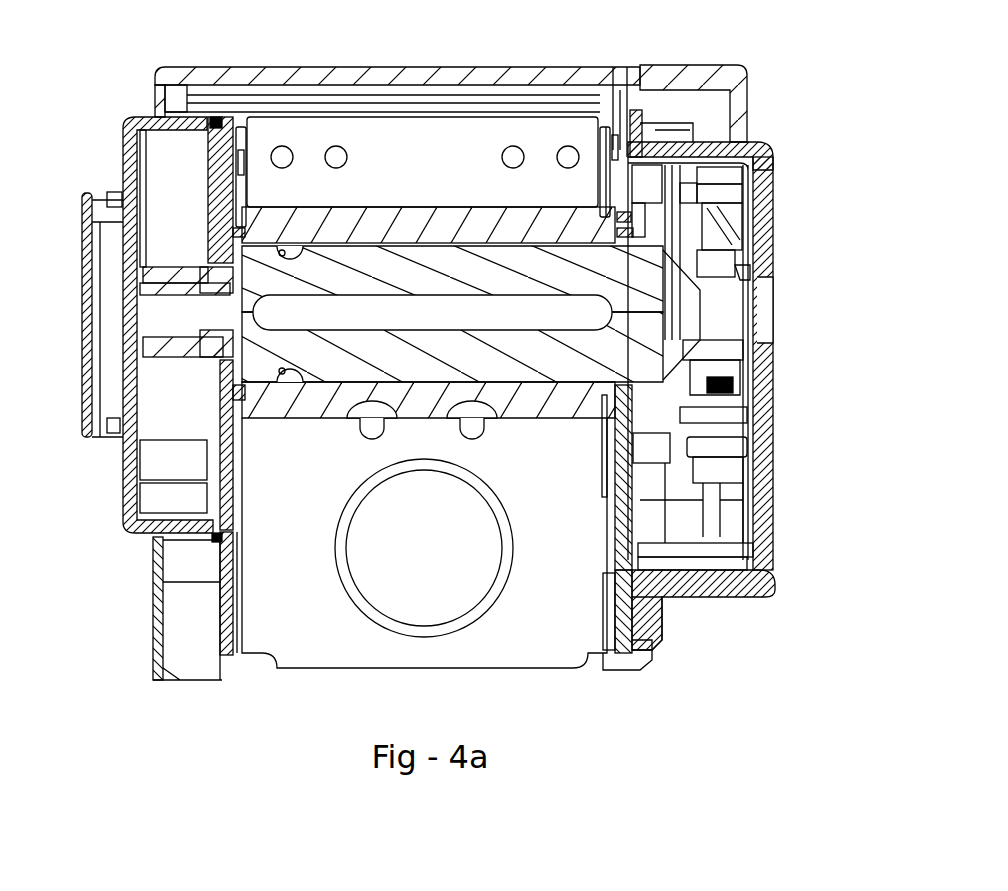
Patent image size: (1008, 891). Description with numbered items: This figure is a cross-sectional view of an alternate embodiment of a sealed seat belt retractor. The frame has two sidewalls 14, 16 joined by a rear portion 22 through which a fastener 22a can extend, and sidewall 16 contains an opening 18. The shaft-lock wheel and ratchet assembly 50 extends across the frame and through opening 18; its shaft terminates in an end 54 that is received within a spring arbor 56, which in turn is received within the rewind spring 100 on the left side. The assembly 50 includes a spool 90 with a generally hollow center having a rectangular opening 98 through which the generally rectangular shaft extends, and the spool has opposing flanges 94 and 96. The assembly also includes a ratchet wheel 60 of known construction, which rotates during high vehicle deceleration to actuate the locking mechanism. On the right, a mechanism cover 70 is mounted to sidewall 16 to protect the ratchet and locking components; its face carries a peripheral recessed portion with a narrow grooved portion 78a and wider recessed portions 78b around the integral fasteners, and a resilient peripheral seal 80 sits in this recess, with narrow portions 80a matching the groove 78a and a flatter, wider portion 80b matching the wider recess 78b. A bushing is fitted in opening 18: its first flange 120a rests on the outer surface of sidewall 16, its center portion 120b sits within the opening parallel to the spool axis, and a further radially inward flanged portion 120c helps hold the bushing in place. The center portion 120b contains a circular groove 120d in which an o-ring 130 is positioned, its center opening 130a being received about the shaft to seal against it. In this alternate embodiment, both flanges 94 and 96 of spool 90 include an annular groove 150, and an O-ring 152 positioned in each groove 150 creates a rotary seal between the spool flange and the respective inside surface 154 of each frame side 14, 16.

The sidewall 14 is at (227, 647).
The sidewall 16 is at (625, 640).
The opening 18 is at (627, 115).
The rear portion 22 is at (320, 632).
The fastener 22a is at (360, 525).
The shaft-lock wheel and ratchet assembly 50 is at (602, 350).
The shaft end 54 is at (190, 313).
The spring arbor 56 is at (657, 460).
The ratchet wheel 60 is at (743, 177).
The cover 70 is at (773, 245).
The narrow grooved portion 78a is at (635, 227).
The wider recessed portion 78b is at (663, 600).
The peripheral seal 80 is at (700, 168).
The narrow seal portion 80a is at (646, 128).
The wider seal portion 80b is at (662, 633).
The spool 90 is at (383, 202).
The spool flange 94 is at (242, 147).
The spool flange 96 is at (600, 140).
The rectangular opening 98 is at (440, 215).
The rewind spring 100 is at (132, 538).
The first flange 120a is at (633, 403).
The center portion 120b is at (650, 443).
The flanged portion 120c is at (620, 385).
The circular groove 120d is at (660, 225).
The o-ring 130 is at (672, 253).
The center opening 130a is at (747, 273).
The annular groove 150 is at (242, 232).
The O-ring 152 is at (240, 228).
The inside surface 154 is at (233, 116).